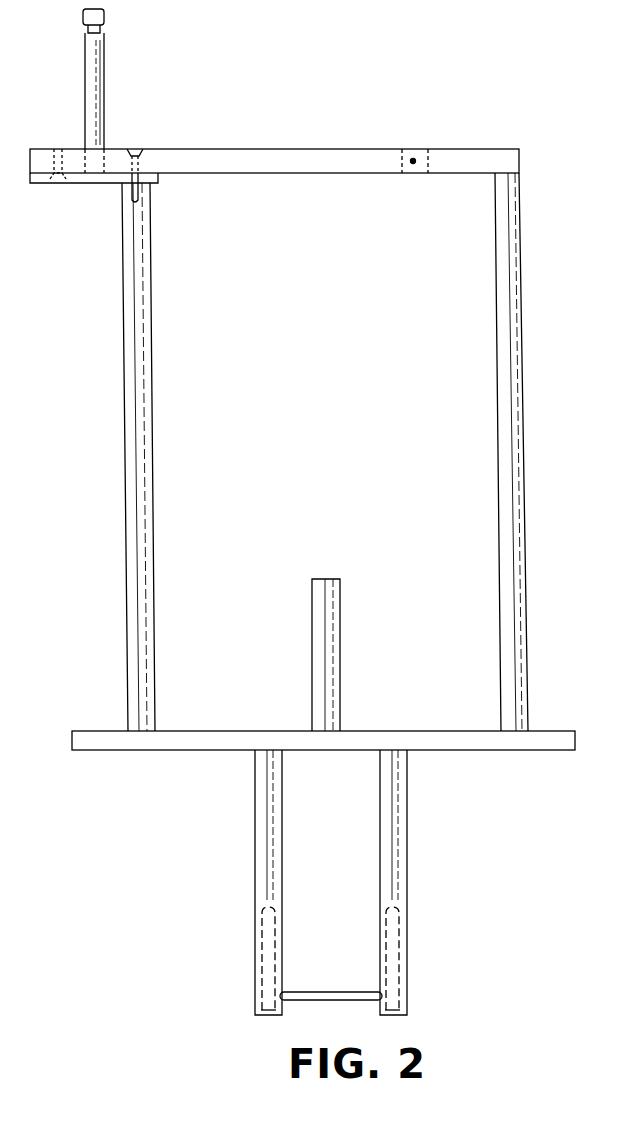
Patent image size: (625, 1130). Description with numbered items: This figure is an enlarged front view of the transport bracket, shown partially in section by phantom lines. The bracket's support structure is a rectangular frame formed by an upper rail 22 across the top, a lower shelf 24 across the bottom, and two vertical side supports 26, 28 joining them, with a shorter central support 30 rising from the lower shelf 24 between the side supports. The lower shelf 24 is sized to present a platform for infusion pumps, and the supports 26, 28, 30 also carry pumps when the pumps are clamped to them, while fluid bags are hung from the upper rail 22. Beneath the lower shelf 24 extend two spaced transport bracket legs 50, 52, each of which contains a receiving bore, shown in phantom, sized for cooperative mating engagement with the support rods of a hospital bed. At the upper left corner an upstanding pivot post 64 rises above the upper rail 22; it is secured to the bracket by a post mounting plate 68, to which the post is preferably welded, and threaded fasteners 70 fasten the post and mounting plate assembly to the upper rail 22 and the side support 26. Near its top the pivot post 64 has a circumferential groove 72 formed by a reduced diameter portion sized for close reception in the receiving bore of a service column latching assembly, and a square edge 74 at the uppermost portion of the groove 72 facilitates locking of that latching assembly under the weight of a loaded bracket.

The upper rail 22 is at (298, 162).
The lower shelf 24 is at (239, 745).
The side support 26 is at (152, 437).
The side support 28 is at (527, 437).
The central support 30 is at (337, 590).
The transport bracket leg 50 is at (275, 875).
The transport bracket leg 52 is at (401, 875).
The pivot post 64 is at (98, 130).
The post mounting plate 68 is at (96, 186).
The threaded fastener 70 is at (57, 181).
The circumferential groove 72 is at (90, 31).
The square edge 74 is at (101, 29).